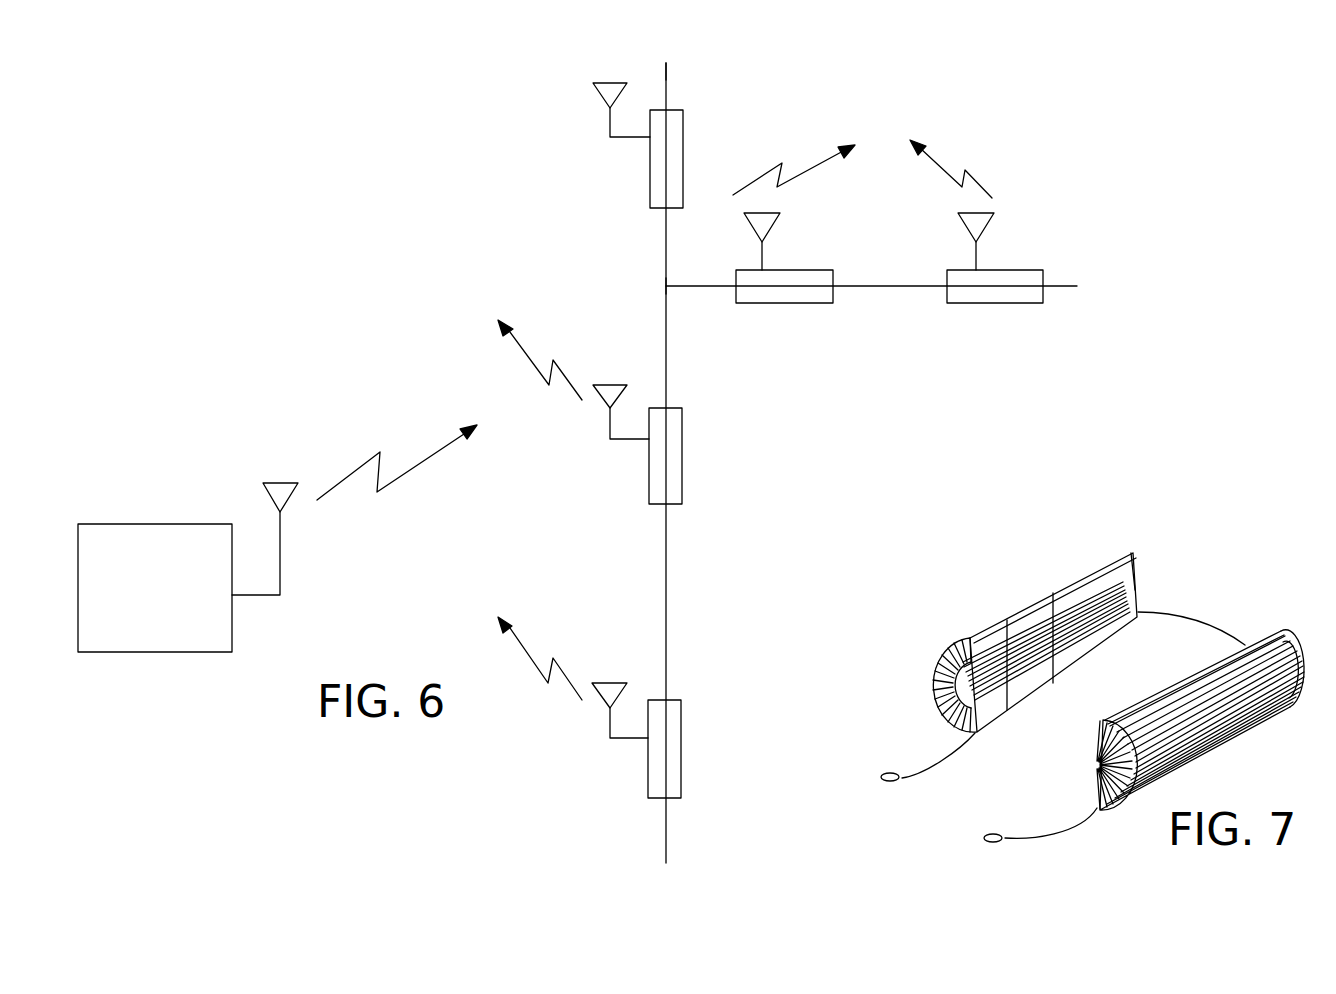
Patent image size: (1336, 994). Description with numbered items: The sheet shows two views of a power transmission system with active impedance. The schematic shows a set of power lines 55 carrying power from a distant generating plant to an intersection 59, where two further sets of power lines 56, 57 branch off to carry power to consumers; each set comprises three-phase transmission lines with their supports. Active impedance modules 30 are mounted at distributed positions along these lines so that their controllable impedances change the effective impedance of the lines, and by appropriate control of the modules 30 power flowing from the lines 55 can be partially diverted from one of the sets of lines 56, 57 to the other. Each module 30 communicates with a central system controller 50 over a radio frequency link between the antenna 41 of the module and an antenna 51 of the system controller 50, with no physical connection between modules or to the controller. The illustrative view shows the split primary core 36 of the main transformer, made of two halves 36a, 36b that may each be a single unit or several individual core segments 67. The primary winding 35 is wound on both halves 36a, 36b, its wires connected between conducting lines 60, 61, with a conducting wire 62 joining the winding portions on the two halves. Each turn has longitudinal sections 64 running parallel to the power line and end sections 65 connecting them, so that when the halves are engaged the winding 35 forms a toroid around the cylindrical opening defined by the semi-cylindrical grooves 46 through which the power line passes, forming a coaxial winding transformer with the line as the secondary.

In FIG. 6, the active impedance module 30 is at (683, 128).
In FIG. 6, the antenna 41 is at (595, 103).
In FIG. 6, the system controller 50 is at (190, 524).
In FIG. 6, the antenna 51 is at (275, 483).
In FIG. 6, the set of power lines 55 is at (666, 596).
In FIG. 6, the set of power lines 56 is at (668, 76).
In FIG. 6, the set of power lines 57 is at (925, 288).
In FIG. 6, the intersection 59 is at (666, 286).
In FIG. 7, the main transformer primary winding 35 is at (1292, 650).
In FIG. 7, the core 36 is at (999, 606).
In FIG. 7, the core half 36a is at (1132, 572).
In FIG. 7, the core half 36b is at (1277, 632).
In FIG. 7, the semi-cylindrical groove 46 is at (1127, 596).
In FIG. 7, the conducting line 60 is at (940, 758).
In FIG. 7, the conducting line 61 is at (1013, 827).
In FIG. 7, the conducting wire 62 is at (1173, 620).
In FIG. 7, the longitudinal section 64 is at (1083, 572).
In FIG. 7, the end section 65 is at (935, 685).
In FIG. 7, the core segment 67 is at (1072, 663).